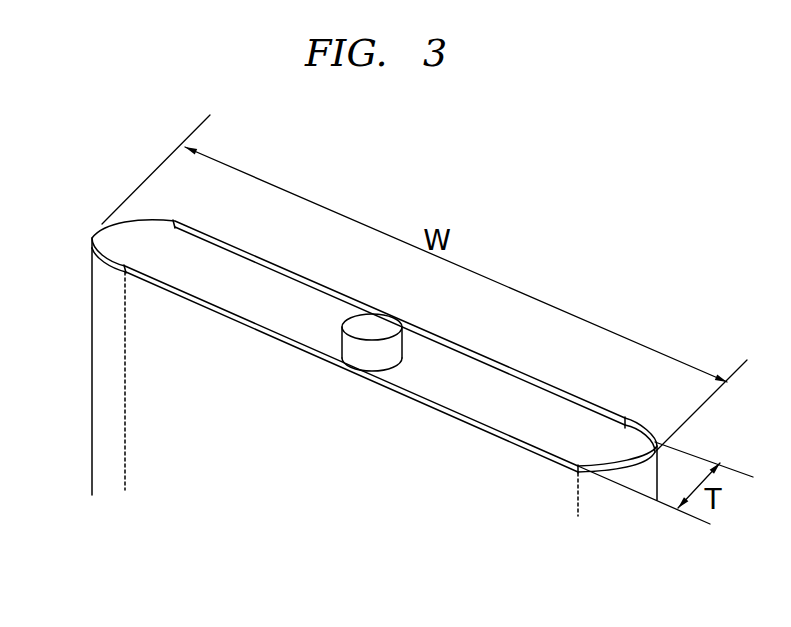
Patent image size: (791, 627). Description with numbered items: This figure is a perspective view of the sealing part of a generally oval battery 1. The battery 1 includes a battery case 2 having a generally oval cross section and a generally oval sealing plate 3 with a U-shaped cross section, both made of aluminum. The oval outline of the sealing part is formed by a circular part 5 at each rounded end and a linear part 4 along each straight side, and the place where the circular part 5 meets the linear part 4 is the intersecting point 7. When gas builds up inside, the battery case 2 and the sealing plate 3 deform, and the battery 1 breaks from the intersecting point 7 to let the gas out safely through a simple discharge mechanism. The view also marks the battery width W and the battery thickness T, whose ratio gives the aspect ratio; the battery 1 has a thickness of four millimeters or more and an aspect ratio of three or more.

The battery 1 is at (235, 460).
The battery case 2 is at (142, 383).
The sealing plate 3 is at (141, 247).
The linear part 4 is at (227, 312).
The circular part 5 is at (642, 466).
The intersecting point 7 is at (173, 222).